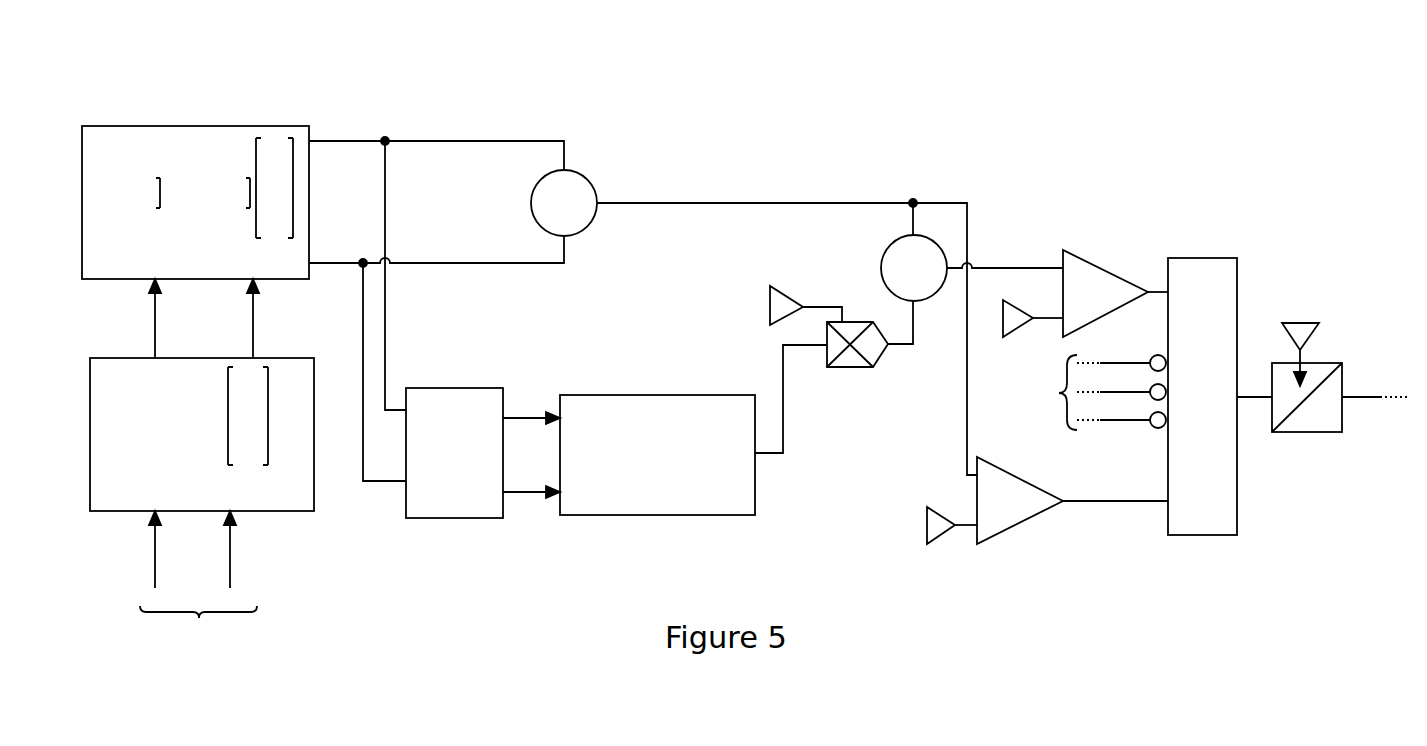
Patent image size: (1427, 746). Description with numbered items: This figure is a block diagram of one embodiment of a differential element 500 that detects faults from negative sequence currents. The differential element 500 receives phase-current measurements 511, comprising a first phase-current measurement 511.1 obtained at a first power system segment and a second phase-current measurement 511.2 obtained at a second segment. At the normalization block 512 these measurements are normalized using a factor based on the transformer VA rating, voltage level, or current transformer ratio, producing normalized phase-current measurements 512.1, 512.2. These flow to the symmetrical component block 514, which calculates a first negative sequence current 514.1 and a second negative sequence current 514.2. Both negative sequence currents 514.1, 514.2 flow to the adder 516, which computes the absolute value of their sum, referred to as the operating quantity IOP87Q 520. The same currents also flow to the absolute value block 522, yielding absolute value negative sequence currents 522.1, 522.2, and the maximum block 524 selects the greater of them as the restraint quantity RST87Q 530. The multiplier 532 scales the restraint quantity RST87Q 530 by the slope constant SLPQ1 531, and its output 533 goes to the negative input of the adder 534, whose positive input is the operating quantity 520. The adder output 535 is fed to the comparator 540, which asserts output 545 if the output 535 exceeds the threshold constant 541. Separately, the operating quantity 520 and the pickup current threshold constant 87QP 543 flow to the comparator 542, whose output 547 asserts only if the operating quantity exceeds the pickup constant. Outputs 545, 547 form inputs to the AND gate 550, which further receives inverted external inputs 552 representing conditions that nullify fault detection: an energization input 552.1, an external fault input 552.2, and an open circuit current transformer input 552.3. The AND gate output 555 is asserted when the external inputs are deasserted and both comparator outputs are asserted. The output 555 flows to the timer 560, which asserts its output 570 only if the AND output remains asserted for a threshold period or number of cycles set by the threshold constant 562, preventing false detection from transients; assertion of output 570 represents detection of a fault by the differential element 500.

The differential element 500 is at (452, 36).
The phase-current measurements 511 is at (198, 651).
The first phase-current measurement 511.1 is at (155, 553).
The second phase-current measurement 511.2 is at (230, 553).
The normalization block 512 is at (179, 486).
The normalized first phase-current measurement 512.1 is at (155, 326).
The normalized second phase-current measurement 512.2 is at (253, 326).
The symmetrical component block 514 is at (176, 258).
The first negative sequence current 514.1 is at (388, 143).
The second negative sequence current 514.2 is at (390, 265).
The adder 516 is at (592, 174).
The operating quantity IOP87Q 520 is at (676, 203).
The absolute value block 522 is at (436, 473).
The absolute value negative sequence current 522.1 is at (518, 416).
The absolute value negative sequence current 522.2 is at (525, 496).
The maximum block 524 is at (639, 476).
The restraint quantity RST87Q 530 is at (783, 453).
The slope constant SLPQ1 531 is at (794, 300).
The multiplier 532 is at (862, 358).
The multiplier output 533 is at (917, 336).
The adder 534 is at (883, 249).
The adder output 535 is at (1012, 268).
The comparator 540 is at (1105, 293).
The threshold constant 541 is at (1018, 312).
The comparator 542 is at (1020, 500).
The pickup current threshold constant 87QP 543 is at (945, 538).
The comparator output 545 is at (1150, 290).
The comparator output 547 is at (1125, 500).
The AND gate 550 is at (1185, 313).
The external inputs 552 is at (1052, 392).
The energization input 552.1 is at (1121, 357).
The external fault input 552.2 is at (1121, 386).
The open circuit current transformer input 552.3 is at (1121, 414).
The AND gate output 555 is at (1245, 399).
The timer 560 is at (1310, 433).
The threshold constant 562 is at (1300, 323).
The timer output 570 is at (1380, 397).